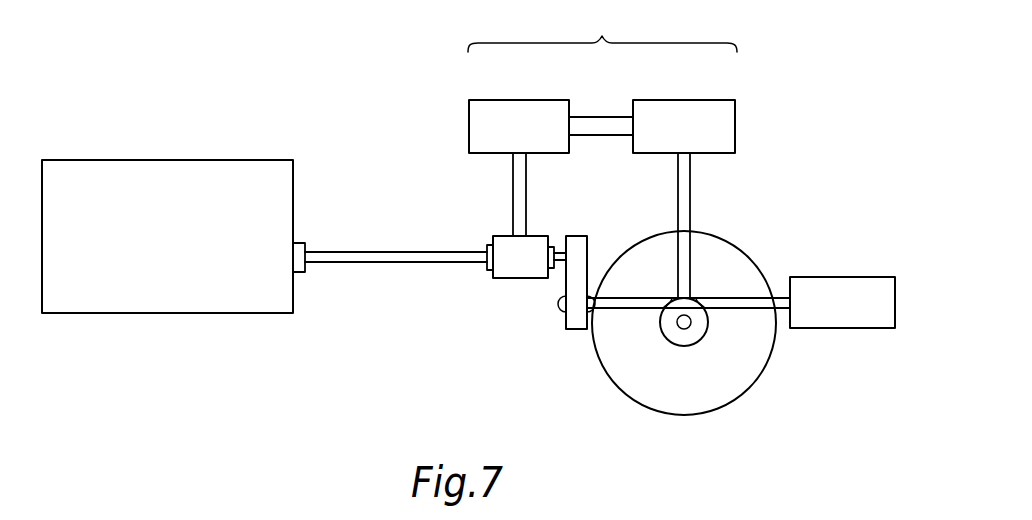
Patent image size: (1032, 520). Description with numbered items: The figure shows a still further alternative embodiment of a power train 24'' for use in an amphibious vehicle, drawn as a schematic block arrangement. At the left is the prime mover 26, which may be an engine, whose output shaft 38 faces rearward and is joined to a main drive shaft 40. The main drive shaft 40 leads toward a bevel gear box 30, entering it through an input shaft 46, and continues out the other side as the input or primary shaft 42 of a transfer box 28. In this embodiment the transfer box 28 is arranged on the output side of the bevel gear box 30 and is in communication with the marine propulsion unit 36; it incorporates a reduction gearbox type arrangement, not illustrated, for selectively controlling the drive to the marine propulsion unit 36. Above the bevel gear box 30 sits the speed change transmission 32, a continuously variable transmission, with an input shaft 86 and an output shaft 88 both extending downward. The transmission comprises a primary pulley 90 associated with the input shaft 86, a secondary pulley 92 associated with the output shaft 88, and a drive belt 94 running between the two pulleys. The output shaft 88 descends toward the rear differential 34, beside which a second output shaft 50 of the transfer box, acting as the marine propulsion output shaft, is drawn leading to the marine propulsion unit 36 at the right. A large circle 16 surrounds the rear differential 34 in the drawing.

The prime mover 26 is at (93, 178).
The output shaft 38 is at (298, 242).
The main drive shaft 40 is at (392, 262).
The bevel gear box 30 is at (512, 246).
The input shaft 46 is at (495, 257).
The input or primary shaft 42 is at (558, 252).
The transfer box 28 is at (582, 250).
The input shaft 86 is at (528, 187).
The output shaft 88 is at (693, 198).
The primary pulley 90 is at (480, 120).
The secondary pulley 92 is at (723, 120).
The drive belt 94 is at (600, 125).
The speed change transmission 32 is at (602, 28).
The wheel 16 is at (753, 260).
The second output shaft 50 is at (628, 303).
The rear differential 34 is at (693, 333).
The marine propulsion unit 36 is at (862, 290).
The power train 24'' is at (852, 133).